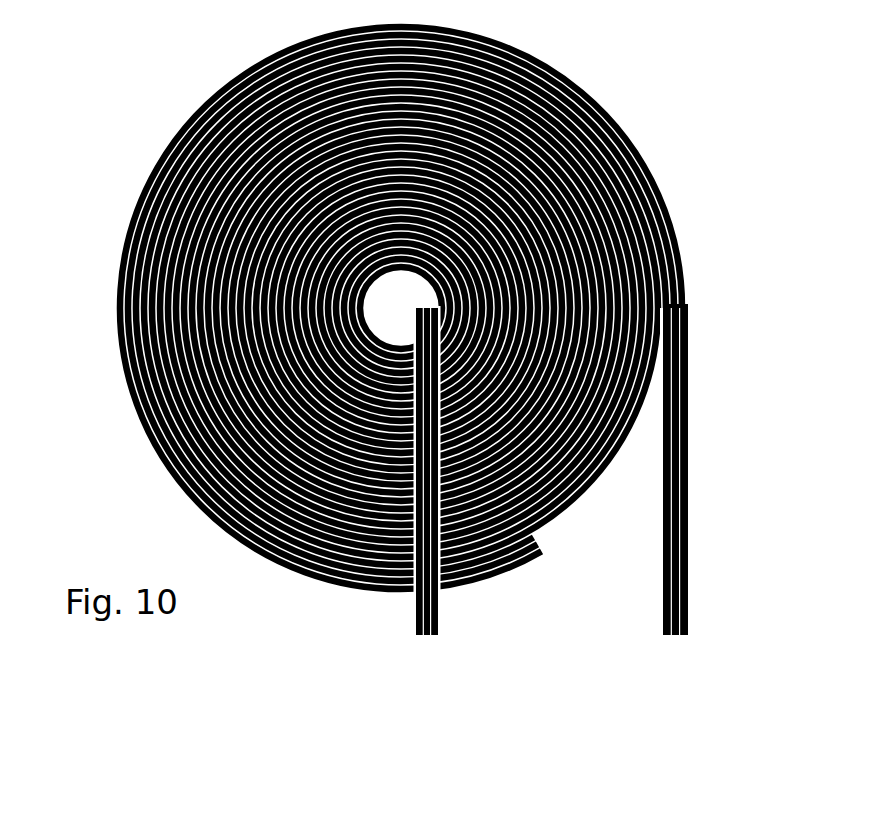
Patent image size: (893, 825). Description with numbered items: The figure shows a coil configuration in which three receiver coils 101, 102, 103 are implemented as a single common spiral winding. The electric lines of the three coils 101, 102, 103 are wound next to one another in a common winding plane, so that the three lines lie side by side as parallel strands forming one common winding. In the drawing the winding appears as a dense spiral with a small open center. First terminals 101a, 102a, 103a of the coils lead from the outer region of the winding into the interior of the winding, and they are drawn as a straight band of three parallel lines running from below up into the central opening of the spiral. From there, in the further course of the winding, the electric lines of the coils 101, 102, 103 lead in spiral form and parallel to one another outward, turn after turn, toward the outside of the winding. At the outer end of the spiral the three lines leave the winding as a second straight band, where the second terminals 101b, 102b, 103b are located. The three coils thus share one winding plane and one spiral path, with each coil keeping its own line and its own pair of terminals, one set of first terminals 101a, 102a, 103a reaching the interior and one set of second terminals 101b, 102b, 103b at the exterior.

The receiver coil 101 is at (144, 452).
The receiver coil 102 is at (124, 402).
The receiver coil 103 is at (112, 356).
The first terminal of coil 101 101a is at (432, 608).
The first terminal of coil 102 102a is at (418, 636).
The first terminal of coil 103 103a is at (407, 612).
The second terminal of coil 101 101b is at (683, 597).
The second terminal of coil 102 102b is at (674, 628).
The second terminal of coil 103 103b is at (655, 606).